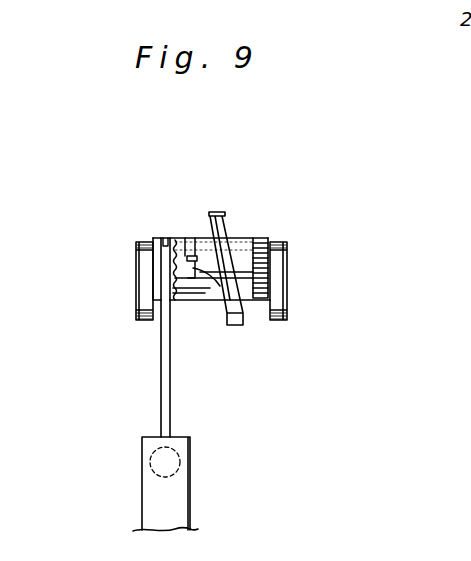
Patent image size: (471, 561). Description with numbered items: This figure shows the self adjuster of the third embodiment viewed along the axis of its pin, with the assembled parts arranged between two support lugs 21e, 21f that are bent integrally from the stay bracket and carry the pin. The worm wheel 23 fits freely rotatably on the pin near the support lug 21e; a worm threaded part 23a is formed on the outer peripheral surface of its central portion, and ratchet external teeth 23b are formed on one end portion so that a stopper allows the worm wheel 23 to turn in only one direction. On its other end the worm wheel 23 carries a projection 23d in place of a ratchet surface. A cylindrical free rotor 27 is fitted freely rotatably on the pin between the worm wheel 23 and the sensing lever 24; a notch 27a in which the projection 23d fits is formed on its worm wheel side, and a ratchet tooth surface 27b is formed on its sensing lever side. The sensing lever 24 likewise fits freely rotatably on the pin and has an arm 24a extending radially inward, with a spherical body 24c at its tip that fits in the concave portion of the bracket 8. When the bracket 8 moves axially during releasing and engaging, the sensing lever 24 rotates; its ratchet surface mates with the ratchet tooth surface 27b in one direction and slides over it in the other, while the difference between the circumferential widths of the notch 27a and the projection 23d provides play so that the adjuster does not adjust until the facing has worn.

The bracket 8 is at (177, 497).
The support lug 21e is at (287, 270).
The support lug 21f is at (137, 282).
The worm wheel 23 is at (237, 227).
The worm threaded part 23a is at (218, 212).
The ratchet external teeth 23b is at (262, 237).
The projection 23d is at (196, 275).
The sensing lever 24 is at (173, 305).
The arm 24a is at (163, 370).
The spherical body 24c is at (165, 236).
The free rotor 27 is at (188, 303).
The notch 27a is at (189, 236).
The ratchet tooth surface 27b is at (183, 236).